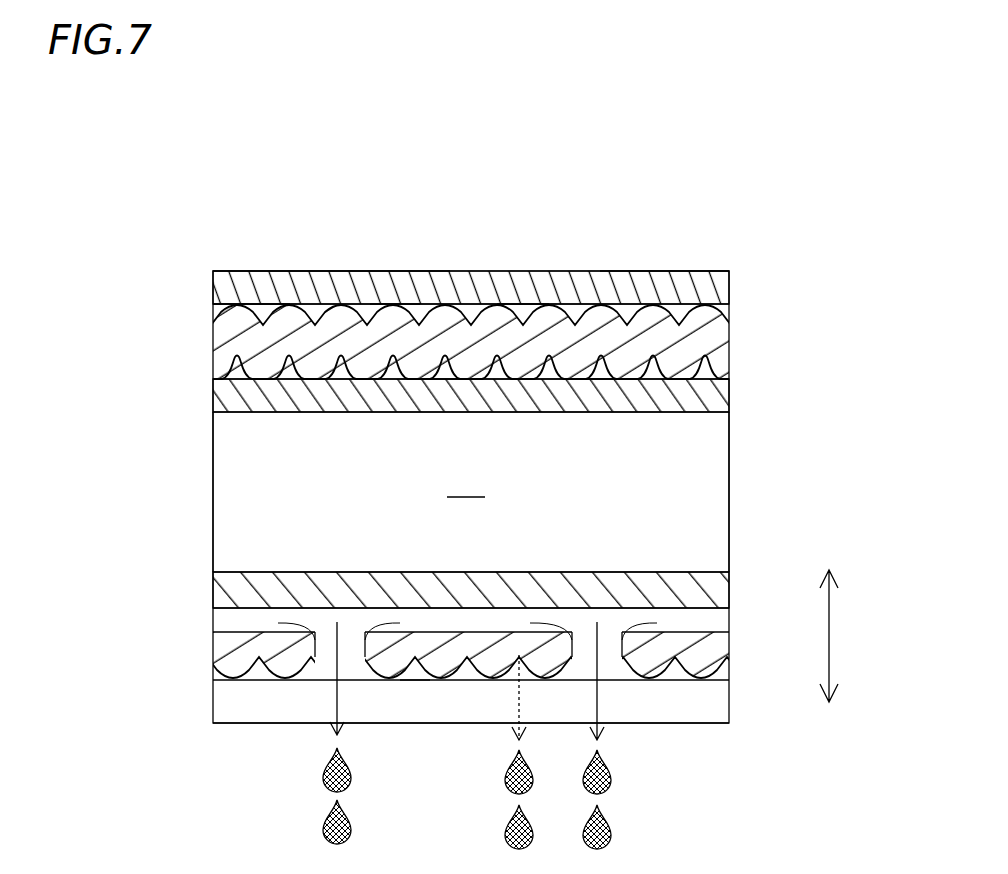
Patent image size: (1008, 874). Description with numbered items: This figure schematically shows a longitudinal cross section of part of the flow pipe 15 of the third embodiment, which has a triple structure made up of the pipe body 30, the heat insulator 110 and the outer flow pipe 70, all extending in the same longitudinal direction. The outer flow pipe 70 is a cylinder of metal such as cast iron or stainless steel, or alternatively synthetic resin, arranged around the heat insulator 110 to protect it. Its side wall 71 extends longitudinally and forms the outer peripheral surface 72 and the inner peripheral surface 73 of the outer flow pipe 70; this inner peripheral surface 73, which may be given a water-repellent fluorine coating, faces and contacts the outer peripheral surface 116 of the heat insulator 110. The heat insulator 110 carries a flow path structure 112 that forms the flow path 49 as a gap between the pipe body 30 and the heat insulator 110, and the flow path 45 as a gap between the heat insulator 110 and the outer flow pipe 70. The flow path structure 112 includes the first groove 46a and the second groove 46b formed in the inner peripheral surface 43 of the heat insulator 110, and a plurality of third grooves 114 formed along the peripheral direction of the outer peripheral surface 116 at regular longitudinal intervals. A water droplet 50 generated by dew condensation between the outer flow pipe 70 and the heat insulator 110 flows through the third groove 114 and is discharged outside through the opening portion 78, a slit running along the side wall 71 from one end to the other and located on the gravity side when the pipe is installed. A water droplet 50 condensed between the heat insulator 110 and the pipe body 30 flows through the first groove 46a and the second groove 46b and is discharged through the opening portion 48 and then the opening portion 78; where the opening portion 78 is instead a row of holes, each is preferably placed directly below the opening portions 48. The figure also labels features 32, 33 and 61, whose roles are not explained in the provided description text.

The flow pipe 15 is at (819, 237).
The outer flow pipe 70 is at (734, 261).
The side wall 71 is at (676, 288).
The outer peripheral surface 72 is at (240, 300).
The inner peripheral surface 73 is at (300, 305).
The heat insulator 110 is at (741, 353).
The flow path structure 112 is at (478, 226).
The third groove 114 is at (256, 300).
The outer peripheral surface 116 is at (398, 306).
The inner peripheral surface 43 is at (372, 376).
The protrusion 32 is at (444, 372).
The flow path 45 is at (523, 324).
The first groove 46a is at (600, 376).
The flow path 49 is at (587, 301).
The pipe body 30 is at (741, 404).
The substrate surface 33 is at (240, 412).
The pressure chamber 61 is at (471, 492).
The second groove 46b is at (676, 624).
The opening portion 48 is at (322, 651).
The opening portion 78 is at (478, 712).
The water droplet 50 is at (353, 780).